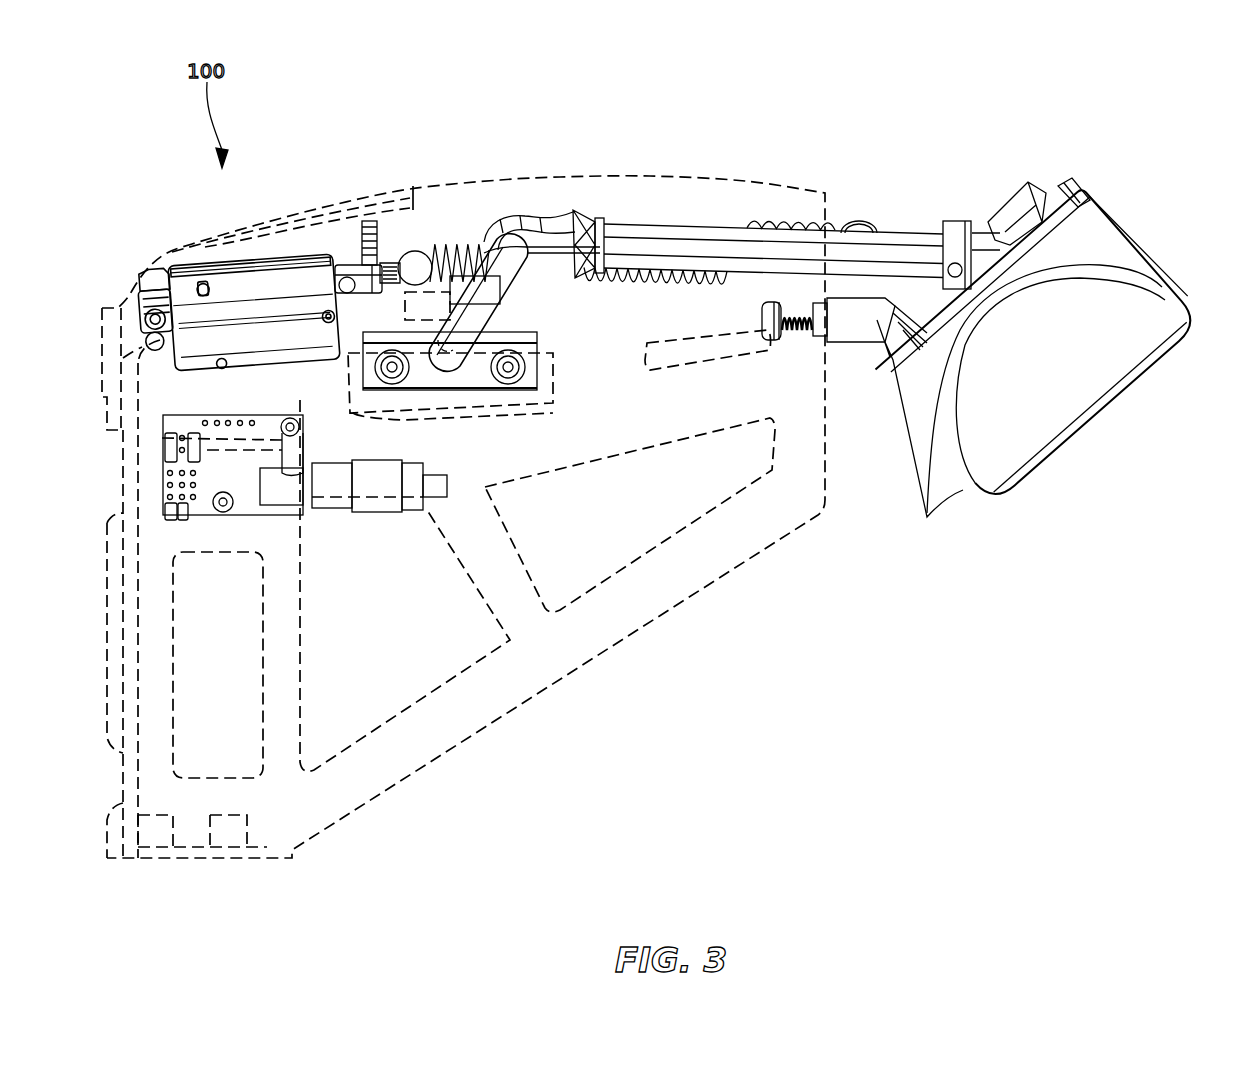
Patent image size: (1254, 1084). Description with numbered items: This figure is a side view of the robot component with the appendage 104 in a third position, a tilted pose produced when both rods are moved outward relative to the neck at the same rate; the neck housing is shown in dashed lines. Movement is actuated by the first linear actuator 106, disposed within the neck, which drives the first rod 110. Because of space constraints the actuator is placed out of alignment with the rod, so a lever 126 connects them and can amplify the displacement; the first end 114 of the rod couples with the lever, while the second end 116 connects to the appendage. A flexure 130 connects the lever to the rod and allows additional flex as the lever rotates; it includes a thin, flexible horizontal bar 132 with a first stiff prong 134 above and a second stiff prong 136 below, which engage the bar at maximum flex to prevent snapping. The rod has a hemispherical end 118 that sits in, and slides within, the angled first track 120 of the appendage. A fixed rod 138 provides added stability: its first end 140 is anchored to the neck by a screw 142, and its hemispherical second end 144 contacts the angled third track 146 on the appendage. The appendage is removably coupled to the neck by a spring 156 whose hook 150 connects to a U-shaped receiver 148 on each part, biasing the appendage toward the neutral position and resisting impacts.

The appendage 104 is at (1140, 313).
The first linear actuator 106 is at (240, 307).
The first rod 110 is at (747, 240).
The first end 114 is at (667, 233).
The second end 116 is at (903, 240).
The hemispherical end 118 is at (983, 230).
The first track 120 is at (1093, 197).
The lever 126 is at (503, 270).
The flexure 130 is at (545, 225).
The horizontal bar 132 is at (580, 212).
The first stiff prong 134 is at (600, 220).
The second stiff prong 136 is at (583, 267).
The fixed rod 138 is at (860, 310).
The first end 140 is at (823, 322).
The screw 142 is at (787, 333).
The hemispherical second end 144 is at (980, 240).
The third track 146 is at (937, 298).
The receiver 148 is at (412, 252).
The hook 150 is at (318, 305).
The spring 156 is at (660, 280).